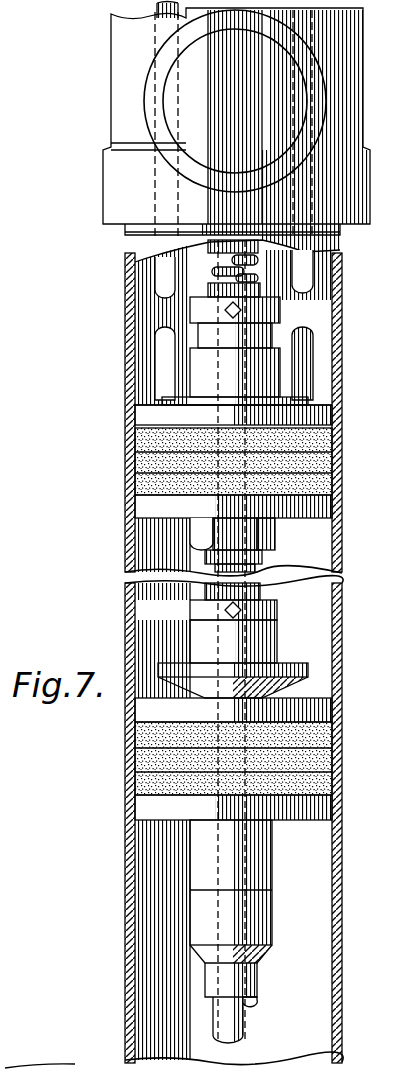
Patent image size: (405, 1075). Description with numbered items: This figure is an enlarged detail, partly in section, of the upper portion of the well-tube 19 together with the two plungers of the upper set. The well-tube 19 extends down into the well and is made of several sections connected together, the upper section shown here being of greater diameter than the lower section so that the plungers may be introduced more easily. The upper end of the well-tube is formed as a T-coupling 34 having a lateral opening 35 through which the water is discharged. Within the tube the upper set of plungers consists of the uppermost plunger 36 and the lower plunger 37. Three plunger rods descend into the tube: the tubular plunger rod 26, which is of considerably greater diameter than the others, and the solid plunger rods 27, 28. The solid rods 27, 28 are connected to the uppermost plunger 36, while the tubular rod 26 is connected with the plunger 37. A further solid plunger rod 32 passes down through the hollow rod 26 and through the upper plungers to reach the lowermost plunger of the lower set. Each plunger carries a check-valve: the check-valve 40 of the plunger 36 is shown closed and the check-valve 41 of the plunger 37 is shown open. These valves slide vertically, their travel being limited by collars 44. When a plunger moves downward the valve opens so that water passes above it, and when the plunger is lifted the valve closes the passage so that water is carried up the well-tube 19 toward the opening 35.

The well-tube 19 is at (330, 403).
The plunger rod 26 is at (235, 101).
The plunger rod 27 is at (170, 279).
The plunger rod 28 is at (312, 275).
The solid plunger rod 32 is at (249, 267).
The T-coupling 34 is at (122, 107).
The lateral opening 35 is at (193, 137).
The upper plunger of the upper set 36 is at (293, 413).
The lower plunger of the upper set 37 is at (295, 710).
The check-valve 40 is at (257, 367).
The check-valve 41 is at (268, 656).
The collar 44 is at (280, 310).